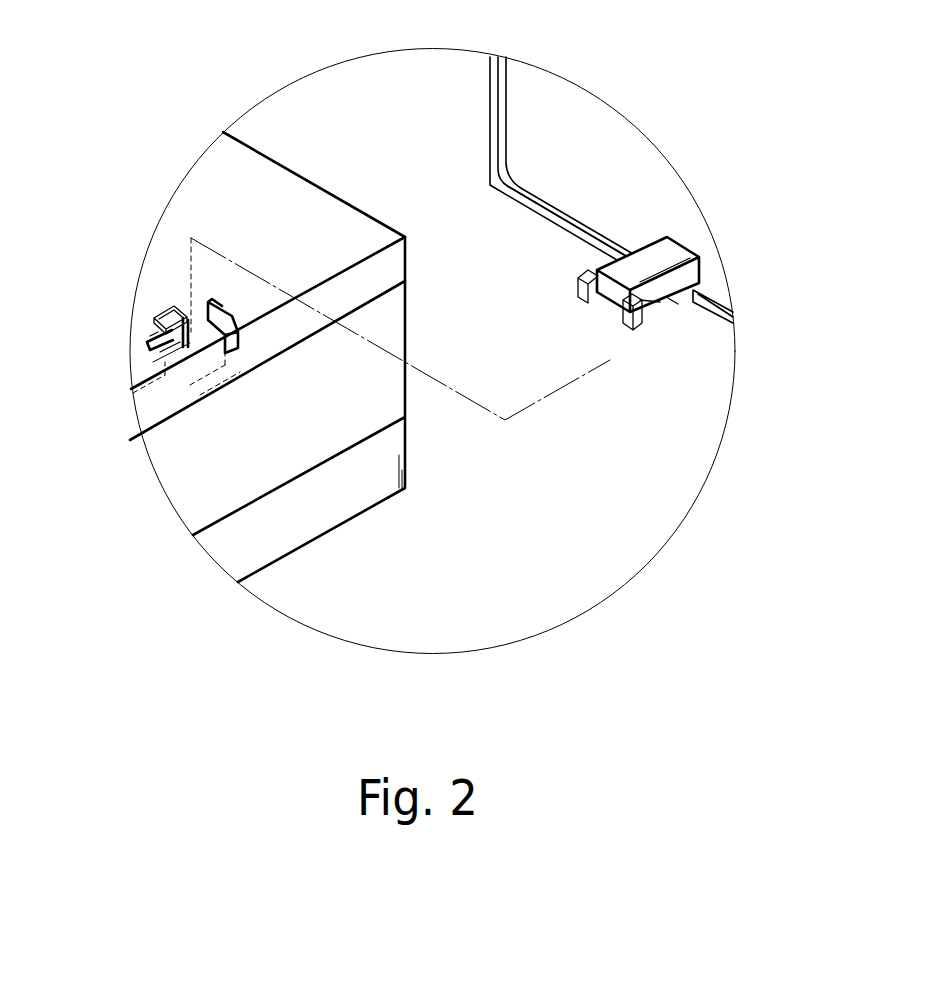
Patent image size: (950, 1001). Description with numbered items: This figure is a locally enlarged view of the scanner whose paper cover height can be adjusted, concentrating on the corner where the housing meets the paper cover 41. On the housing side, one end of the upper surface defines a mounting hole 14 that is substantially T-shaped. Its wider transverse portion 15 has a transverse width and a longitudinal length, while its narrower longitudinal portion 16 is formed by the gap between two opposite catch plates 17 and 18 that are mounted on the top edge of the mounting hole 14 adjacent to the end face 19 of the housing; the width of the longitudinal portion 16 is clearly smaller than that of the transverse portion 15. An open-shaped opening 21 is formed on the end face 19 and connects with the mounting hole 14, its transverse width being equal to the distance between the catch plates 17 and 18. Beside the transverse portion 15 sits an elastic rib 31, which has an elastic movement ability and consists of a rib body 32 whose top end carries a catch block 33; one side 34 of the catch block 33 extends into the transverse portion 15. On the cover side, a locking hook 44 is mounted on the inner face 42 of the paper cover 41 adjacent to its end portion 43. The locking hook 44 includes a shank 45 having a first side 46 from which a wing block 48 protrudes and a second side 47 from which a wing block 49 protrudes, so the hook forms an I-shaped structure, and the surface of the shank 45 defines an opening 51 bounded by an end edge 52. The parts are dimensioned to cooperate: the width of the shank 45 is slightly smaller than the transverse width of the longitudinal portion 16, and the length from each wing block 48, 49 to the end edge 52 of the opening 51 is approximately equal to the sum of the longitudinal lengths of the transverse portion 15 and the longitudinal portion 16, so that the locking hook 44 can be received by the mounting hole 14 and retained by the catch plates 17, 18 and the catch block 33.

The mounting hole 14 is at (167, 304).
The transverse portion 15 is at (197, 301).
The longitudinal portion 16 is at (213, 342).
The catch plate 17 is at (176, 345).
The catch plate 18 is at (231, 305).
The end face 19 is at (240, 487).
The opening 21 is at (197, 337).
The elastic rib 31 is at (156, 296).
The rib body 32 is at (176, 338).
The catch block 33 is at (162, 312).
The side 34 is at (153, 339).
The paper cover 41 is at (488, 121).
The inner face 42 is at (558, 182).
The end portion 43 is at (715, 322).
The locking hook 44 is at (655, 335).
The shank 45 is at (655, 262).
The first side 46 is at (680, 280).
The second side 47 is at (605, 272).
The wing block 48 is at (622, 312).
The wing block 49 is at (580, 297).
The opening 51 is at (661, 300).
The end edge 52 is at (677, 307).